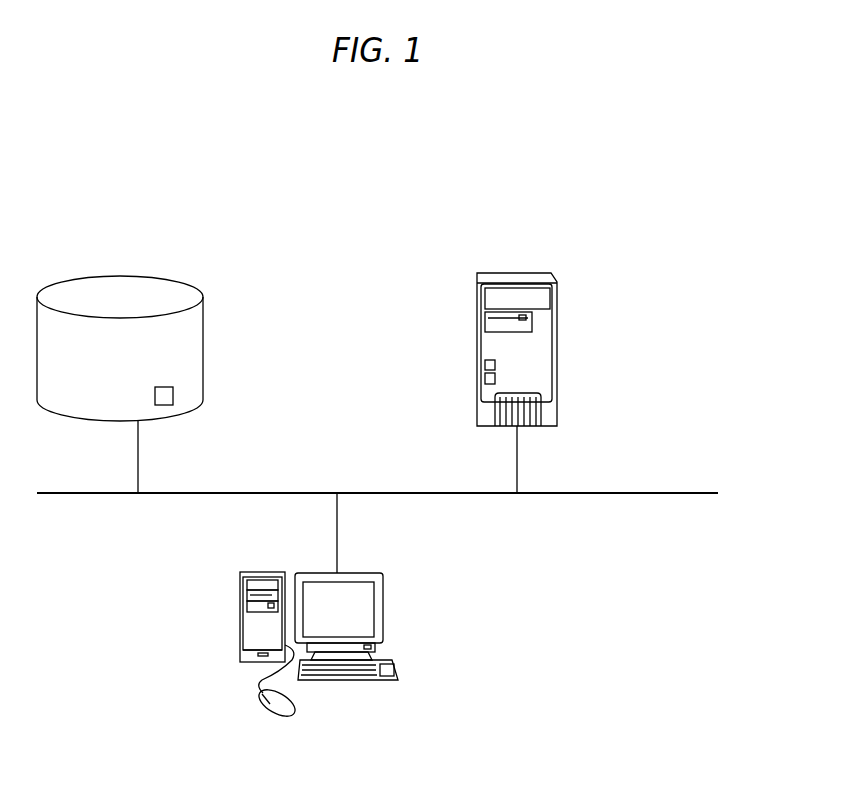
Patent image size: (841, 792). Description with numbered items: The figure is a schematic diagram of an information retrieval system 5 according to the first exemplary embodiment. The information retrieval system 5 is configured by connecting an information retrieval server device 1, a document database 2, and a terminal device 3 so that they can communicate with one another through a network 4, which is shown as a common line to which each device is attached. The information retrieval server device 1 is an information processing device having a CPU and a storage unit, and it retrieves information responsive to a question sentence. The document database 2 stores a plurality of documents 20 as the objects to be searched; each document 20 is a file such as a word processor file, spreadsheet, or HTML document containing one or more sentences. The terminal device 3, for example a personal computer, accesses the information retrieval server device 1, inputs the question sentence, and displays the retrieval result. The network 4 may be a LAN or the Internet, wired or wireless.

The information retrieval server device 1 is at (515, 273).
The document database 2 is at (170, 280).
The terminal device 3 is at (348, 573).
The network 4 is at (615, 493).
The information retrieval system 5 is at (554, 168).
The document 20 is at (173, 405).